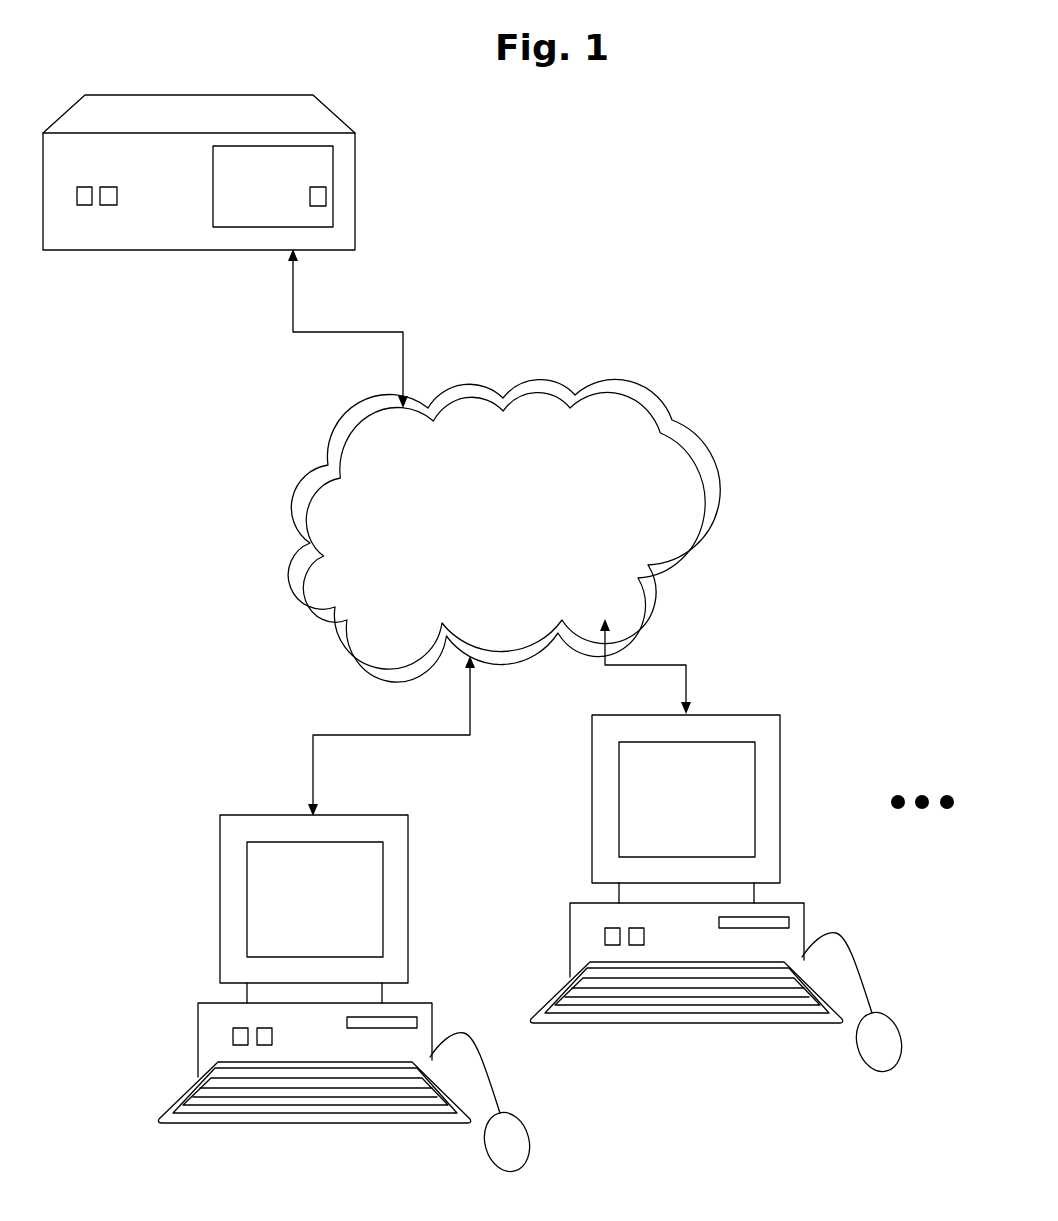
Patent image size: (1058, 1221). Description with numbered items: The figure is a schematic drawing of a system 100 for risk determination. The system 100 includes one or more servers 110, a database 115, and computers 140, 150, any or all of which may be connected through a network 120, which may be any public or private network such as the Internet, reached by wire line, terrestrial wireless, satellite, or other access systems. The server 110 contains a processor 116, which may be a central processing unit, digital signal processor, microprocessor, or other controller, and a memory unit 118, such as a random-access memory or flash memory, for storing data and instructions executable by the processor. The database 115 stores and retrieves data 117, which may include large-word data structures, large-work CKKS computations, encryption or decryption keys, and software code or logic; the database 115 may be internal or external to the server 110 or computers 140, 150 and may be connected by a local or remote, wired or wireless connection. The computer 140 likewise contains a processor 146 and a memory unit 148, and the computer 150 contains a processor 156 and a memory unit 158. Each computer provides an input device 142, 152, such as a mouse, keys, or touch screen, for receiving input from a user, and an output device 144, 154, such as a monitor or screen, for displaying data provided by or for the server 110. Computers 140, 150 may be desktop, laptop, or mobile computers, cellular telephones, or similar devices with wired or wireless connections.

The system 100 is at (794, 254).
The server 110 is at (217, 121).
The database 115 is at (302, 215).
The processor 116 is at (83, 205).
The data 117 is at (318, 206).
The memory unit 118 is at (108, 187).
The network 120 is at (504, 530).
The computer 140 is at (273, 812).
The input device 142 is at (515, 1118).
The output device 144 is at (315, 899).
The processor 146 is at (233, 1037).
The memory unit 148 is at (257, 1027).
The computer 150 is at (723, 855).
The input device 152 is at (881, 1005).
The output device 154 is at (687, 799).
The processor 156 is at (552, 948).
The memory unit 158 is at (584, 915).